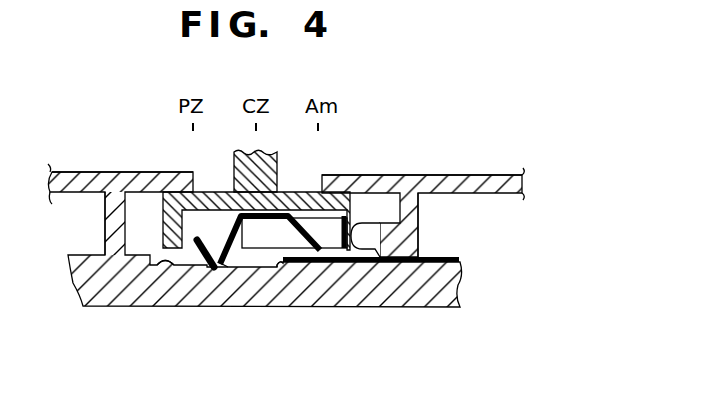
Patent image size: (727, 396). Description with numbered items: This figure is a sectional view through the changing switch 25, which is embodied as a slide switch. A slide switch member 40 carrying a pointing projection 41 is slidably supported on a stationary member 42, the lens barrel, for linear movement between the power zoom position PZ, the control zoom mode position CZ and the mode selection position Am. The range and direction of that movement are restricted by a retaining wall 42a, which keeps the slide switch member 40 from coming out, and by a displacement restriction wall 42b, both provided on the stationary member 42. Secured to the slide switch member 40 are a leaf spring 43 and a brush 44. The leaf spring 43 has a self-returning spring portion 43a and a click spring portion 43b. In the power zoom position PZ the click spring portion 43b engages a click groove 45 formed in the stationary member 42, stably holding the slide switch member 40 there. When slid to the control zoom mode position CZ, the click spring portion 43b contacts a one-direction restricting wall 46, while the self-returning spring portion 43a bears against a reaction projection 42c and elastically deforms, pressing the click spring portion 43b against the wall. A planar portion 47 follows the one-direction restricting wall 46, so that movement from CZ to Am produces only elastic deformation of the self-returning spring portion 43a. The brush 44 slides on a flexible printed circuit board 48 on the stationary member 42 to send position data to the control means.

The changing switch 25 is at (89, 100).
The slide switch member 40 is at (232, 192).
The pointing projection 41 is at (273, 153).
The stationary member 42 is at (97, 307).
The retaining wall 42a is at (140, 172).
The displacement restriction wall 42b is at (112, 233).
The reaction projection 42c is at (382, 181).
The leaf spring 43 is at (335, 294).
The self-returning spring portion 43a is at (353, 262).
The click spring portion 43b is at (229, 268).
The brush 44 is at (321, 254).
The click groove 45 is at (160, 268).
The one-direction restricting wall 46 is at (200, 272).
The planar portion 47 is at (281, 264).
The flexible printed circuit board 48 is at (456, 258).